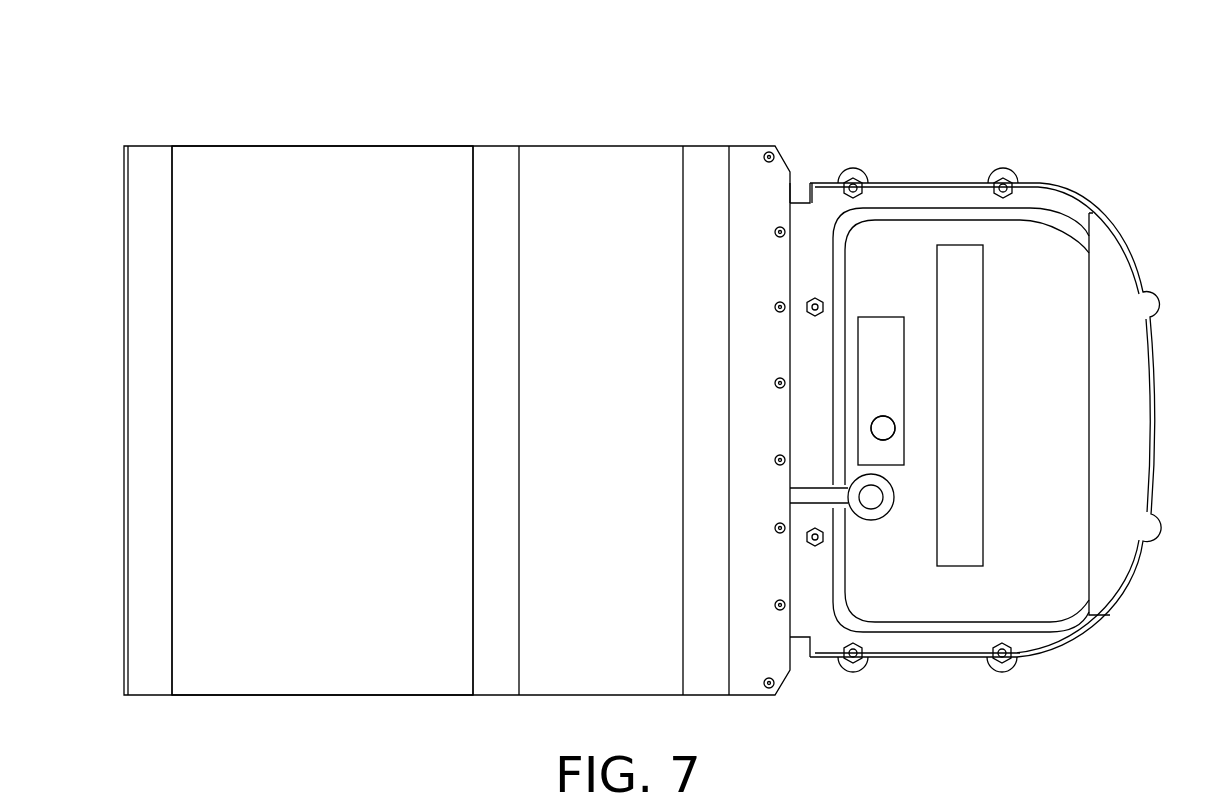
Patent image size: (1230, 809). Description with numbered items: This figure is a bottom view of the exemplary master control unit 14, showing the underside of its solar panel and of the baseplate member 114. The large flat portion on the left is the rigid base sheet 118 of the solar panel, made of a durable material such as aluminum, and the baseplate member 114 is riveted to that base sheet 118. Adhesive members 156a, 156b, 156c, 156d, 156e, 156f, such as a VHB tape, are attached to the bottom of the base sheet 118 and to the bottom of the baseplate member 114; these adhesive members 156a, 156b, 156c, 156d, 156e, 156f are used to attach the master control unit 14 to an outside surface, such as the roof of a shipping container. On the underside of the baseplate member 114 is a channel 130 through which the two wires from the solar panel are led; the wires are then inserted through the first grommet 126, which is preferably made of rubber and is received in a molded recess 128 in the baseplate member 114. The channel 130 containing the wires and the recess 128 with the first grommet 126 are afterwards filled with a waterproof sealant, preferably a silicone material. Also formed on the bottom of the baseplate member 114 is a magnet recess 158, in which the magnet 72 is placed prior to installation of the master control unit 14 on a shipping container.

The master control unit 14 is at (108, 101).
The adhesive member 156a is at (155, 157).
The base sheet 118 is at (292, 190).
The adhesive member 156b is at (495, 172).
The adhesive member 156c is at (708, 162).
The magnet recess 158 is at (871, 418).
The adhesive member 156d is at (875, 332).
The adhesive member 156e is at (958, 263).
The adhesive member 156f is at (1127, 338).
The magnet 72 is at (883, 428).
The baseplate member 114 is at (1063, 583).
The first grommet 126 is at (870, 508).
The molded recess 128 is at (883, 512).
The channel 130 is at (812, 497).